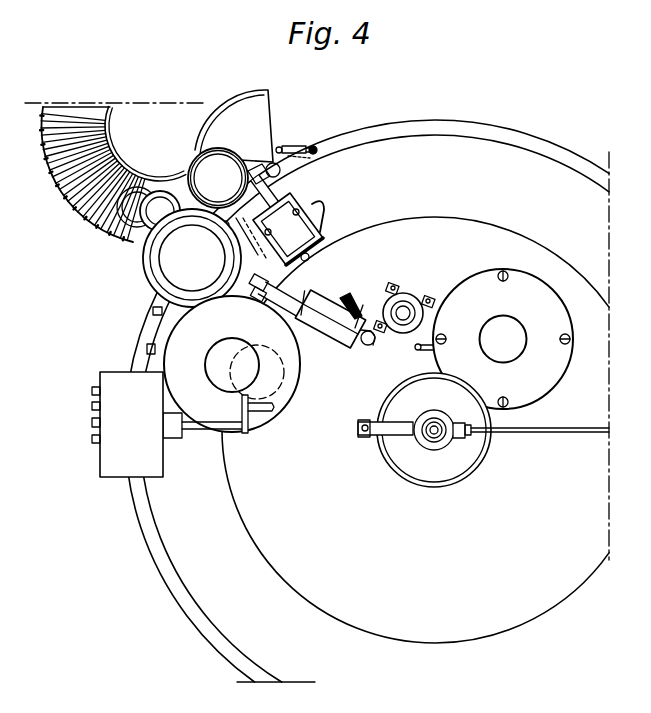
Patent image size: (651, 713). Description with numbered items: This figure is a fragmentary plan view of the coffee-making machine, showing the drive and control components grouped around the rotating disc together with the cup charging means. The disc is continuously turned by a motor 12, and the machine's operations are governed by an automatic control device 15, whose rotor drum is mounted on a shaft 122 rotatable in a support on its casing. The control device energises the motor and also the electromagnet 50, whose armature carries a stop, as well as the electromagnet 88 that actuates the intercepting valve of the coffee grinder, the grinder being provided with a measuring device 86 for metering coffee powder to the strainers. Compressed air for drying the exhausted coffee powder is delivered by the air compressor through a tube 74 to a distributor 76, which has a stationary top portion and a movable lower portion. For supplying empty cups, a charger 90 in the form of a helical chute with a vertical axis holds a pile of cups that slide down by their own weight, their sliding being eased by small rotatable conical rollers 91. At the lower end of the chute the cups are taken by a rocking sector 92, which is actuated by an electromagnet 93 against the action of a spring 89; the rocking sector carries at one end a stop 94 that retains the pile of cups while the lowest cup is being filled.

The motor 12 is at (527, 393).
The automatic control device 15 is at (113, 467).
The electromagnet 50 is at (405, 302).
The tube 74 is at (512, 435).
The distributor 76 is at (433, 440).
The measuring device 86 is at (283, 405).
The electromagnet 88 is at (330, 327).
The spring 89 is at (290, 148).
The charger 90 is at (45, 207).
The rotatable conical rollers 91 is at (78, 198).
The rocking sector 92 is at (252, 157).
The electromagnet 93 is at (300, 208).
The stop 94 is at (217, 118).
The shaft 122 is at (190, 433).